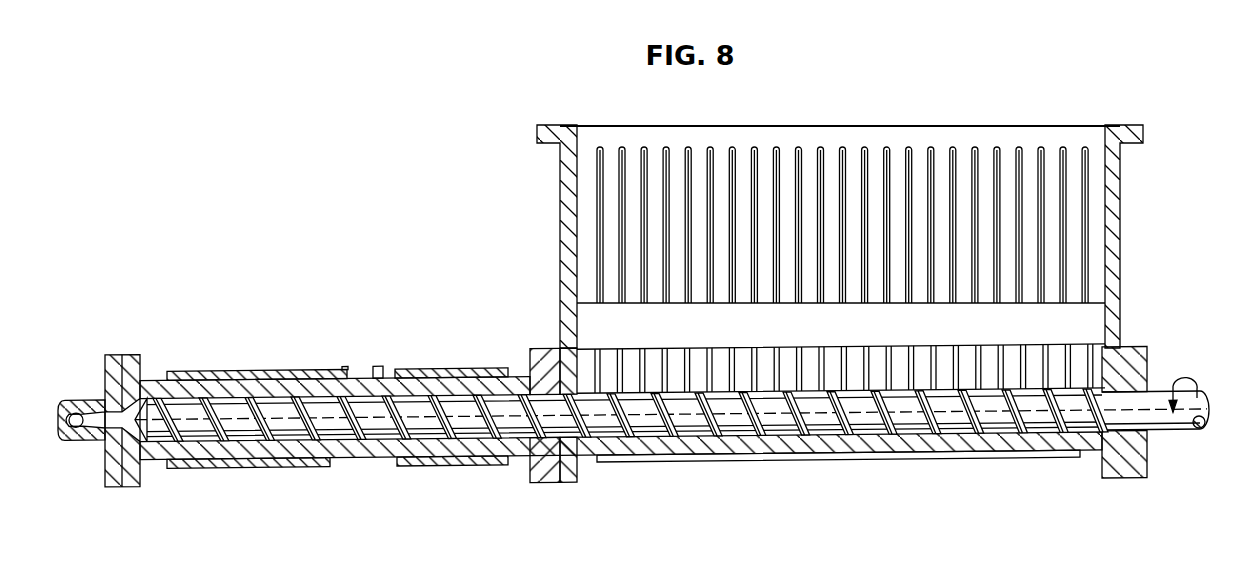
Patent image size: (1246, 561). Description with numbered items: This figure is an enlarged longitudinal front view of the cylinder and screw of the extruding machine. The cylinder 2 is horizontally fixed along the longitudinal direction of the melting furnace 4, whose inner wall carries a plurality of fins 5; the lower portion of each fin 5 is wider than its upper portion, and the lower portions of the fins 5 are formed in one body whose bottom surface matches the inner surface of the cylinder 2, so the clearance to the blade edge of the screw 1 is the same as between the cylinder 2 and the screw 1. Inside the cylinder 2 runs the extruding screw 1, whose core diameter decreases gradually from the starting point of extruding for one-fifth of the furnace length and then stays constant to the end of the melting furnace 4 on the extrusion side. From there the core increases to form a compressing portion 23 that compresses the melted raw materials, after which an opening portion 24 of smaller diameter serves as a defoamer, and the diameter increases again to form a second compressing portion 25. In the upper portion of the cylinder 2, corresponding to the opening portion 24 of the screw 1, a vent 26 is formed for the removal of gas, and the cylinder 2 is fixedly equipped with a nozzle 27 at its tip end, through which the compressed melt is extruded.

The extruding screw 1 is at (672, 414).
The cylinder 2 is at (243, 368).
The melting furnace 4 is at (1120, 250).
The fins 5 is at (1066, 150).
The compressing portion 23 is at (517, 434).
The opening portion 24 is at (377, 435).
The compressing portion 25 is at (233, 428).
The vent 26 is at (362, 398).
The nozzle 27 is at (63, 398).